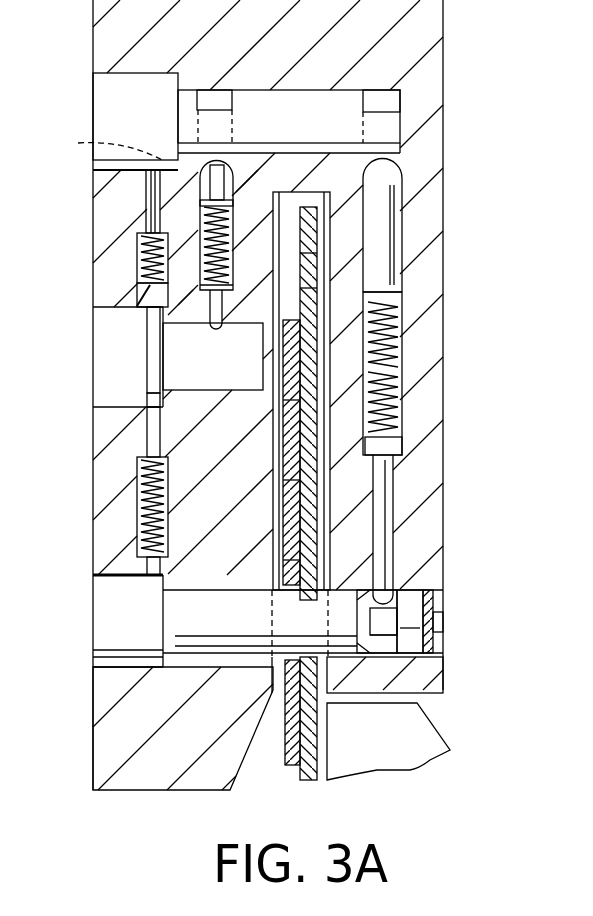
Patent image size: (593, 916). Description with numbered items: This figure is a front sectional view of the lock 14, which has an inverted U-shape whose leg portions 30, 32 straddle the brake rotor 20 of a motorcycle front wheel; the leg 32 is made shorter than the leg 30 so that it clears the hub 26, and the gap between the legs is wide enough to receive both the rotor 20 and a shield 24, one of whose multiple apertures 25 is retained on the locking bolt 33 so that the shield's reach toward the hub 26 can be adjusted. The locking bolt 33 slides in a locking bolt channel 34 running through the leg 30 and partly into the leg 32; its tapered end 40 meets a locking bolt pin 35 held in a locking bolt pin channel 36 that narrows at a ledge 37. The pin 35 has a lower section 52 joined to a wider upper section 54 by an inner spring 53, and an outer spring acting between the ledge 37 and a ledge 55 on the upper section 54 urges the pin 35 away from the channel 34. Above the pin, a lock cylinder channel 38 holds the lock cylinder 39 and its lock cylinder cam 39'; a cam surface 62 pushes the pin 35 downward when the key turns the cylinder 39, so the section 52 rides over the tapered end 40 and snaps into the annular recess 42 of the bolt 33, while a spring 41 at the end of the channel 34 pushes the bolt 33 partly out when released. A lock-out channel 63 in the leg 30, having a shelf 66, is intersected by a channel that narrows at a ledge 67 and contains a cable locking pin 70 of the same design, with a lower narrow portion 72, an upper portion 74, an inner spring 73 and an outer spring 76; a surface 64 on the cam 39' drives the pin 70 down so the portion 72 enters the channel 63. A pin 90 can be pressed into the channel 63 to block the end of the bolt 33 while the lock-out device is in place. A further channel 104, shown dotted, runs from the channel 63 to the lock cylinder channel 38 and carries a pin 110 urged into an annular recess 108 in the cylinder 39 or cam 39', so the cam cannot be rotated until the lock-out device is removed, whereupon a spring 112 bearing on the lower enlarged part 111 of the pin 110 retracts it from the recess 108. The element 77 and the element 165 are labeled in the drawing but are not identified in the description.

The lock 14 is at (472, 40).
The brake rotor 20 is at (312, 205).
The shield 24 is at (300, 290).
The apertures 25 is at (290, 490).
The hub 26 is at (448, 743).
The leg portion 30 is at (88, 420).
The leg portion 32 is at (425, 417).
The locking bolt 33 is at (115, 597).
The locking bolt channel 34 is at (117, 666).
The locking bolt pin 35 is at (410, 234).
The locking bolt pin channel 36 is at (362, 220).
The ledge 37 is at (402, 450).
The lock cylinder channel 38 is at (125, 72).
The lock cylinder 39 is at (99, 121).
The lock cylinder cam 39' is at (289, 121).
The tapered end 40 is at (430, 593).
The spring 41 is at (448, 643).
The annular recess 42 is at (377, 637).
The lower section 52 is at (386, 511).
The inner spring 53 is at (384, 388).
The upper section 54 is at (403, 262).
The ledge 55 is at (384, 301).
The cam surface 62 is at (385, 99).
The lock-out channel 63 is at (136, 300).
The surface 64 is at (212, 100).
The shelf 66 is at (146, 392).
The ledge 67 is at (167, 303).
The cable locking pin 70 is at (200, 283).
The lower narrow portion 72 is at (227, 322).
The inner spring 73 is at (230, 230).
The upper portion 74 is at (228, 172).
The outer spring 76 is at (206, 216).
The spring 77 is at (147, 520).
The pin 90 is at (143, 488).
The channel 104 is at (141, 266).
The annular recess 108 is at (92, 141).
The pin 110 is at (150, 204).
The lower enlarged part 111 is at (146, 303).
The spring 112 is at (141, 244).
The surface 165 is at (197, 172).